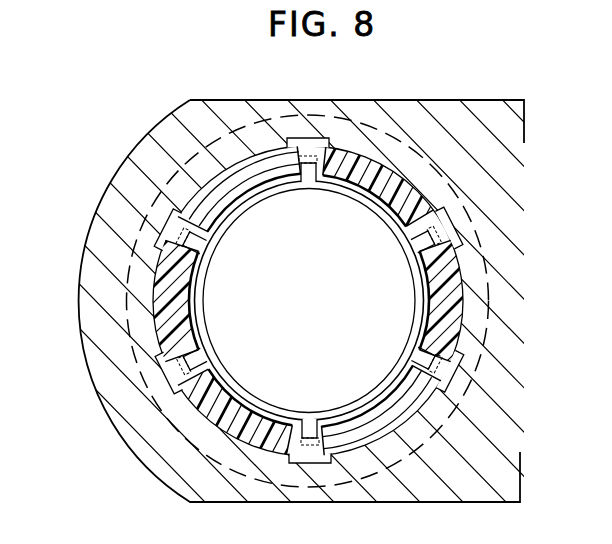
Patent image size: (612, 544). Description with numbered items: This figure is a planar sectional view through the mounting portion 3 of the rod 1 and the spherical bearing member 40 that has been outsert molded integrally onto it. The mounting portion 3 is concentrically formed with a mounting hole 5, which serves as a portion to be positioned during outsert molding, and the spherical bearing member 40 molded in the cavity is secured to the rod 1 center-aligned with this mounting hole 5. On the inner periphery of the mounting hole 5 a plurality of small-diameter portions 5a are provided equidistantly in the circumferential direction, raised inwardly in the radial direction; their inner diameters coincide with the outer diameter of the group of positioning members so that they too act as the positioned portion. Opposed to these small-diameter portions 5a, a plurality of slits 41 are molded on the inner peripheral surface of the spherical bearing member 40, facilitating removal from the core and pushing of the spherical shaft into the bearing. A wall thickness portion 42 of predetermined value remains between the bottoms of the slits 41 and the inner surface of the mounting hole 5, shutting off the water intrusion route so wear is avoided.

The rod 1 is at (97, 198).
The mounting portion 3 is at (84, 286).
The mounting hole 5 is at (181, 289).
The small-diameter portions 5a is at (206, 207).
The spherical bearing member 40 is at (257, 395).
The slits 41 is at (310, 190).
The wall thickness portion 42 is at (177, 318).